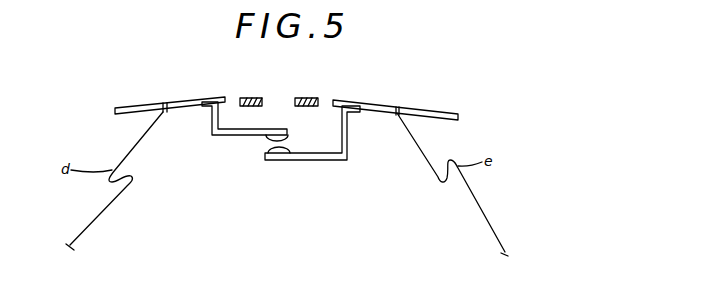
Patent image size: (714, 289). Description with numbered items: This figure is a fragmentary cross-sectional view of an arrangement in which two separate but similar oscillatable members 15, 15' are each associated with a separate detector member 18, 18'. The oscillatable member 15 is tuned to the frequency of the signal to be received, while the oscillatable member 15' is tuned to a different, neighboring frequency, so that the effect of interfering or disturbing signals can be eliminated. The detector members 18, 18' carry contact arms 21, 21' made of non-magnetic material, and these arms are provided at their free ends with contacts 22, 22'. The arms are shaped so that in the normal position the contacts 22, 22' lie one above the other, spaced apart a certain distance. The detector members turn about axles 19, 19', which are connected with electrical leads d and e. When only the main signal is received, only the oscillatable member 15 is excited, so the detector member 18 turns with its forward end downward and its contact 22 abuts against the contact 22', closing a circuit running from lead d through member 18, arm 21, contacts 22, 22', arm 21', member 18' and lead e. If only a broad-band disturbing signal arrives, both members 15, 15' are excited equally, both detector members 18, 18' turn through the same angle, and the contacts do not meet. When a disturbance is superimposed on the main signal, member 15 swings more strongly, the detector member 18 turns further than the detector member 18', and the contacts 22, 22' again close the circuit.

The oscillatable member 15 is at (253, 82).
The oscillatable member 15' is at (306, 83).
The detector member 18 is at (170, 89).
The detector member 18' is at (395, 90).
The axle 19 is at (177, 120).
The axle 19' is at (416, 96).
The contact arm 21 is at (244, 137).
The contact arm 21' is at (312, 151).
The contact 22 is at (259, 157).
The contact 22' is at (284, 168).